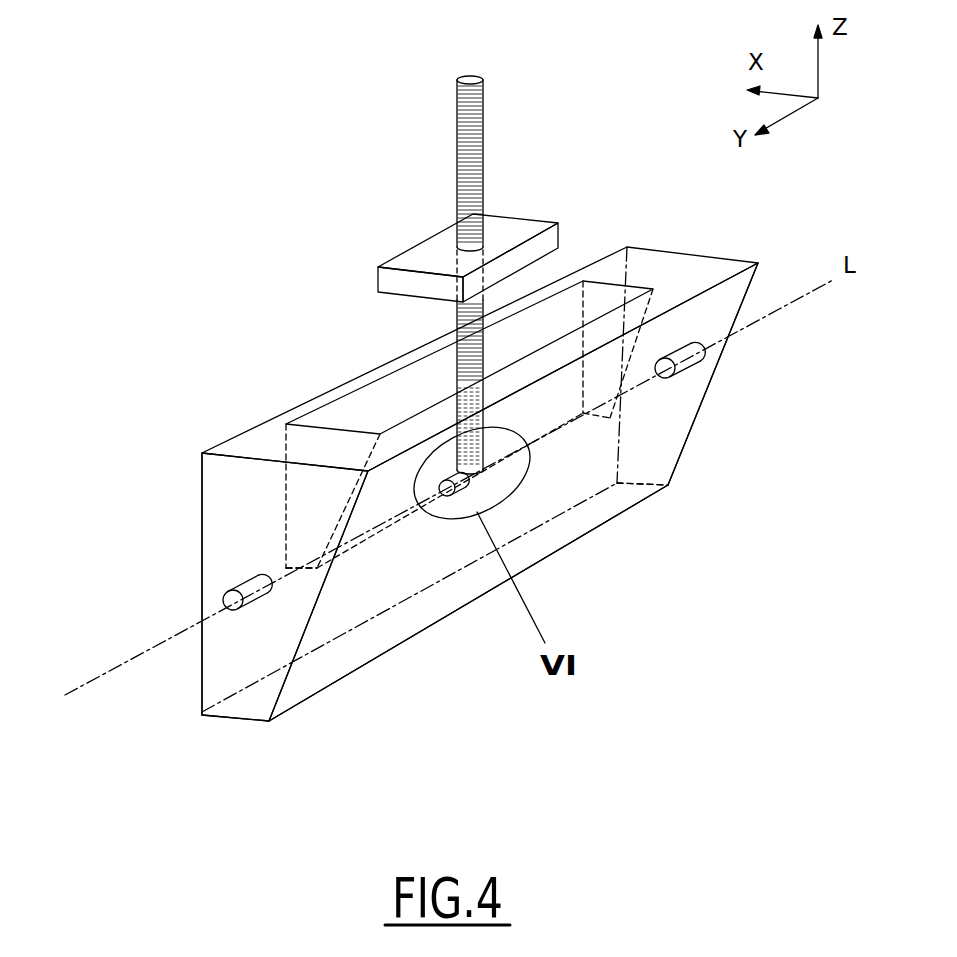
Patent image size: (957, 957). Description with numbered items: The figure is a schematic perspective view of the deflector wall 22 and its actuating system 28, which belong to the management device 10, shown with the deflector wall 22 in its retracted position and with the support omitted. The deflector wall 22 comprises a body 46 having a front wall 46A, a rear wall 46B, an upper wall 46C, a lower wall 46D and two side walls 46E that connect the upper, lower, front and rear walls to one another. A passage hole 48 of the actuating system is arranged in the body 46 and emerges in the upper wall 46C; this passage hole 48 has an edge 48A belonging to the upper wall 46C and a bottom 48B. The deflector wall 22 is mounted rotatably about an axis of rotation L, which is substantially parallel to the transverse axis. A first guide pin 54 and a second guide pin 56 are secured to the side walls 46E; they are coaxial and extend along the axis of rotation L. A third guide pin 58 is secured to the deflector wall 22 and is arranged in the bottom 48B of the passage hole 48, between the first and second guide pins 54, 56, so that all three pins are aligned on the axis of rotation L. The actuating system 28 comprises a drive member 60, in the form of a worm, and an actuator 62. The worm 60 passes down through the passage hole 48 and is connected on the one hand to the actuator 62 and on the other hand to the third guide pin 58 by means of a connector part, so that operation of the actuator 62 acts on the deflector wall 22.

The management device 10 is at (765, 557).
The deflector wall 22 is at (753, 407).
The actuating system 28 is at (505, 200).
The body 46 is at (452, 512).
The front wall 46A is at (200, 523).
The rear wall 46B is at (358, 608).
The upper wall 46C is at (260, 447).
The lower wall 46D is at (327, 667).
The side walls 46E is at (225, 662).
The passage hole 48 is at (388, 413).
The edge 48A is at (520, 360).
The bottom 48B is at (410, 515).
The first guide pin 54 is at (688, 368).
The second guide pin 56 is at (243, 585).
The third guide pin 58 is at (490, 503).
The drive member 60 is at (463, 163).
The actuator 62 is at (425, 263).